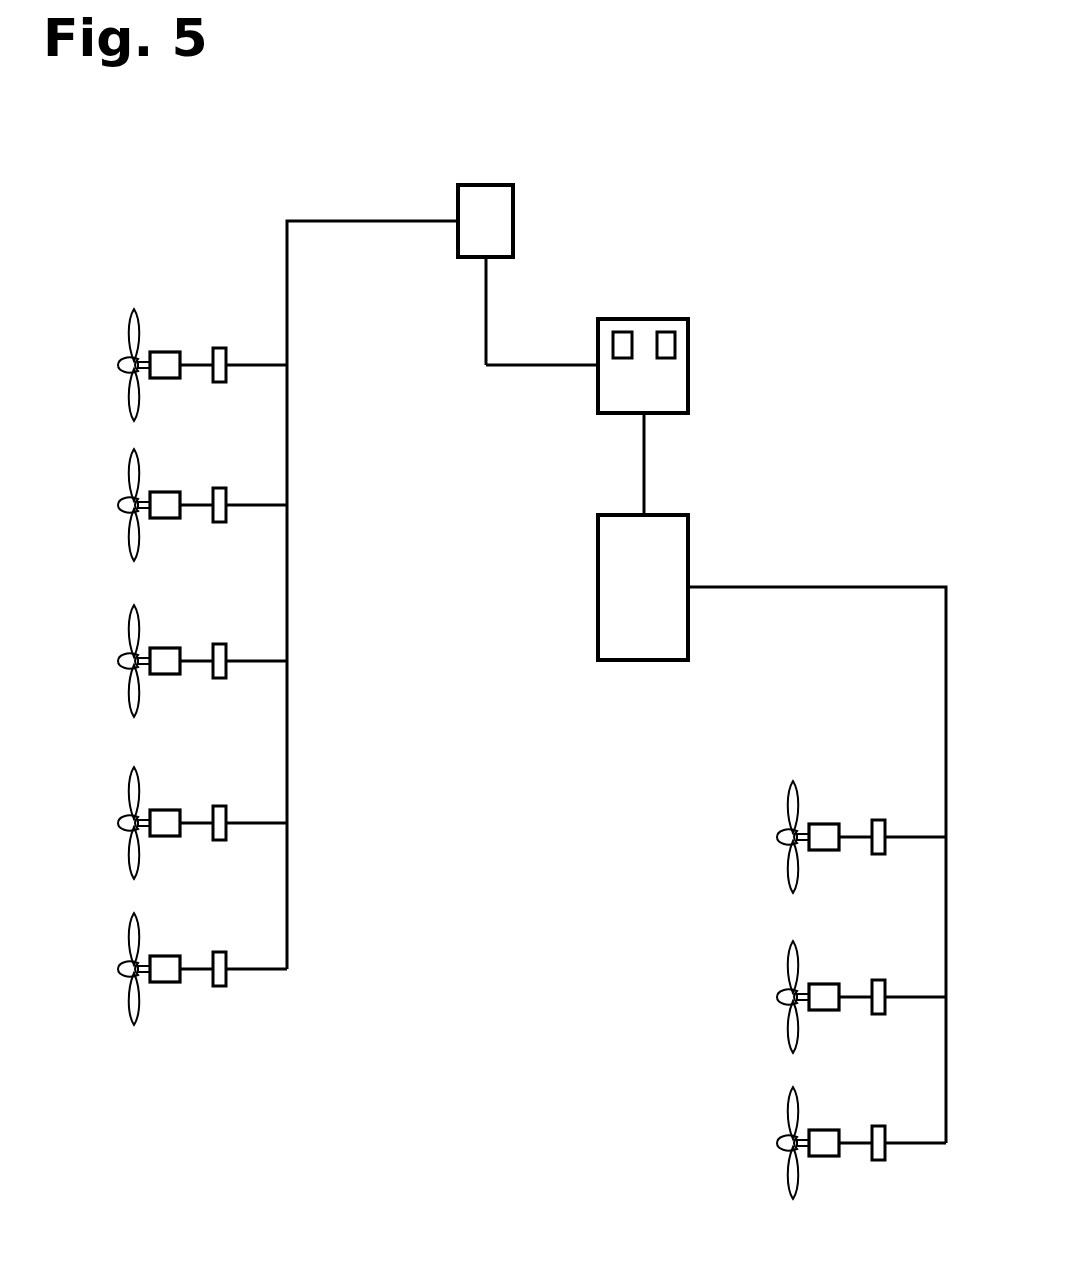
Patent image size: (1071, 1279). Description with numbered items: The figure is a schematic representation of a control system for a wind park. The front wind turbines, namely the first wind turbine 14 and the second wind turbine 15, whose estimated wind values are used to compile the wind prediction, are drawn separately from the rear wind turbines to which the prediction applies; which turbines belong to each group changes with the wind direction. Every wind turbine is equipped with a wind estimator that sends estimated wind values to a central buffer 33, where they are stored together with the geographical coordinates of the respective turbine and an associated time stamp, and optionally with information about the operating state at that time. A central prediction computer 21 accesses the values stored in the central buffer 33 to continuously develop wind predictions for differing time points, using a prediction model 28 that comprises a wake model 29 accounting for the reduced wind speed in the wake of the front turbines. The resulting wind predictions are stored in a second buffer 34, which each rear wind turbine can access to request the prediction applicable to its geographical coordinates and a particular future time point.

The first wind turbine 14 is at (85, 365).
The second wind turbine 15 is at (85, 505).
The central prediction computer 21 is at (690, 385).
The prediction model 28 is at (667, 332).
The wake model 29 is at (622, 332).
The central buffer 33 is at (486, 185).
The second buffer 34 is at (598, 588).